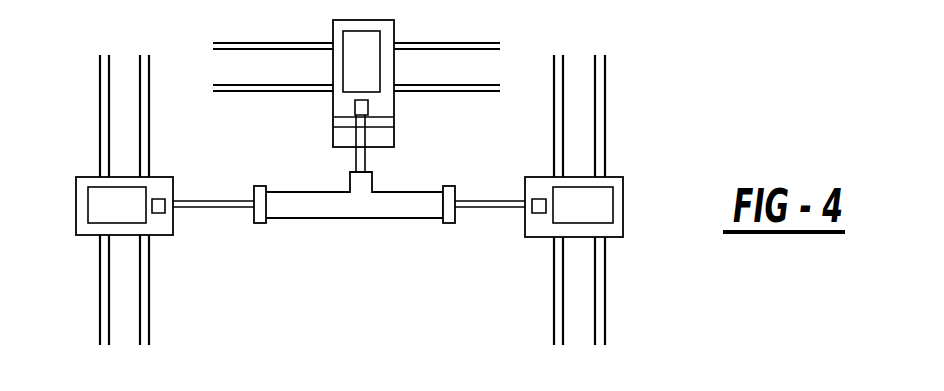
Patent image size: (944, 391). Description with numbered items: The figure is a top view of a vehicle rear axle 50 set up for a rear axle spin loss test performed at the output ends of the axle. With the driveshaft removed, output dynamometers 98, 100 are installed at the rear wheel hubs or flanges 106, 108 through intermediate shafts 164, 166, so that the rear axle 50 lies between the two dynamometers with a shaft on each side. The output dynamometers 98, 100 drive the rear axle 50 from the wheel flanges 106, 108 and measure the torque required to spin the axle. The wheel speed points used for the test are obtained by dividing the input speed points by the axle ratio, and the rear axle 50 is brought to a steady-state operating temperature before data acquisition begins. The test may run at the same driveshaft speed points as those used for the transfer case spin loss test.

The rear axle 50 is at (290, 218).
The output dynamometer 98 is at (102, 223).
The output dynamometer 100 is at (602, 225).
The rear wheel hub or flange 106 is at (262, 224).
The rear wheel hub or flange 108 is at (447, 224).
The intermediate shaft 164 is at (237, 200).
The intermediate shaft 166 is at (503, 198).